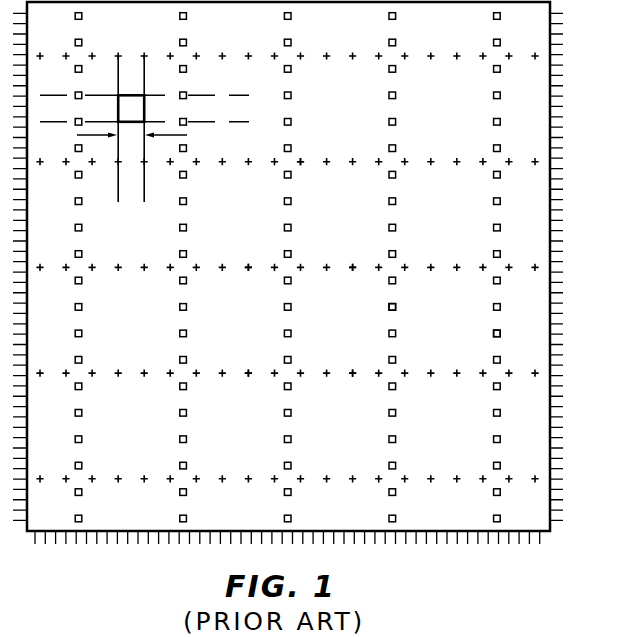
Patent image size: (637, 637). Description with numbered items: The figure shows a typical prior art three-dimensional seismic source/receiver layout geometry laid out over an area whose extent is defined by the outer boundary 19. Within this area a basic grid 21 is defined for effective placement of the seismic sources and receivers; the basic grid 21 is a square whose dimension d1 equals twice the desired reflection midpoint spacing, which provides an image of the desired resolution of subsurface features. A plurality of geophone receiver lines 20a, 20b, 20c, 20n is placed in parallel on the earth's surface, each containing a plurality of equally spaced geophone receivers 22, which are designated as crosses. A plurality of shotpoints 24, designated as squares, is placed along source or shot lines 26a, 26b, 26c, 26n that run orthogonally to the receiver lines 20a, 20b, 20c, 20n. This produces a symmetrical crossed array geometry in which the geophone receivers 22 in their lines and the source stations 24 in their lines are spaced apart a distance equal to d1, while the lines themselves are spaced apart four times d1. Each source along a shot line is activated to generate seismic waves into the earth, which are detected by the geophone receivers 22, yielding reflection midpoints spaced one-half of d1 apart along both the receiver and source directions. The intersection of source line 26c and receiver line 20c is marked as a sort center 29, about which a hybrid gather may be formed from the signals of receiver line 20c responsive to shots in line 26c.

The outer boundary 19 is at (552, 183).
The geophone receiver line 20n is at (521, 58).
The geophone receiver line 20c is at (525, 262).
The geophone receiver line 20b is at (525, 368).
The geophone receiver line 20a is at (525, 475).
The source line 26n is at (80, 31).
The source line 26c is at (288, 26).
The source line 26b is at (392, 26).
The source line 26a is at (492, 26).
The basic grid 21 is at (149, 90).
The geophone receivers 22 is at (249, 262).
The shotpoints 24 is at (398, 306).
The sort center 29 is at (290, 161).